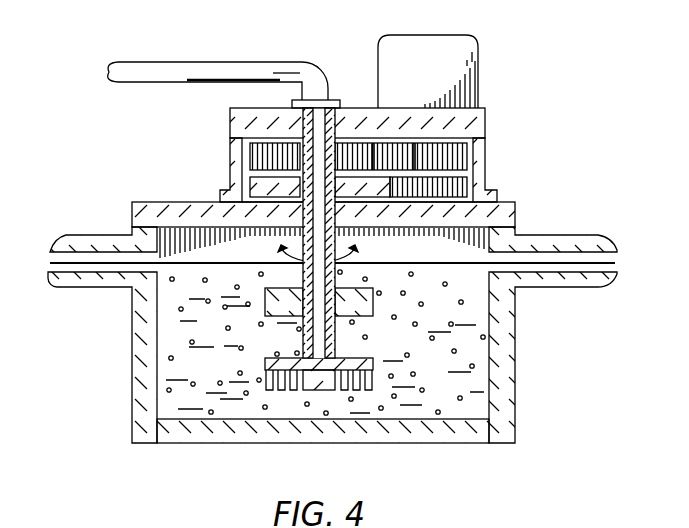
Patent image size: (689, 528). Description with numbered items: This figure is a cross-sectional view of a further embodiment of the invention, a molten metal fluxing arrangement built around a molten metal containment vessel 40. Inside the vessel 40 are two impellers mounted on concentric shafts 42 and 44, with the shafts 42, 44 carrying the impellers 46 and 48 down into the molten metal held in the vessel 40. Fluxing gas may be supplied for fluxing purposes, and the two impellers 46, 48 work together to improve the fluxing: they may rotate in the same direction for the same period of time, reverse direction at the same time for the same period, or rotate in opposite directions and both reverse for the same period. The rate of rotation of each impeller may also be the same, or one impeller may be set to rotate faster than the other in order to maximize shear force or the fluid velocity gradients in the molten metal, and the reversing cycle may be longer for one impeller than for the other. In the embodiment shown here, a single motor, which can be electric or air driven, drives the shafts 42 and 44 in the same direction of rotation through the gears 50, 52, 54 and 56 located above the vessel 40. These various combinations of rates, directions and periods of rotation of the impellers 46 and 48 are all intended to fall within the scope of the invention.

The molten metal containment vessel 40 is at (560, 362).
The concentric shaft 42 is at (330, 276).
The concentric shaft 44 is at (335, 343).
The impeller 46 is at (262, 312).
The impeller 48 is at (373, 369).
The gear 50 is at (250, 162).
The gear 52 is at (250, 192).
The gear 54 is at (467, 163).
The gear 56 is at (467, 189).